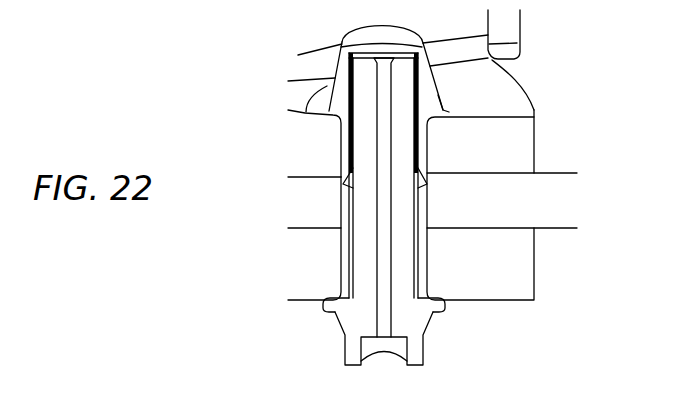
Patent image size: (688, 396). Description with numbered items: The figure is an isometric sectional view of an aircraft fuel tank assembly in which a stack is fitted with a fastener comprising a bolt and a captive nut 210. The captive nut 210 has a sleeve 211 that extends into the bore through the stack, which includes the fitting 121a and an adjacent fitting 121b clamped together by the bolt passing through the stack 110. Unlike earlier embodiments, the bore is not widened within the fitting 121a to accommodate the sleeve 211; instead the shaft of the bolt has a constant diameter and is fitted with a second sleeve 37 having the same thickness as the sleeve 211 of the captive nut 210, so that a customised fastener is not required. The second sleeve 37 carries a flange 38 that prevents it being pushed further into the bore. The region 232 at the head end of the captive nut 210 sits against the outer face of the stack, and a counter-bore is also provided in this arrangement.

The captive nut 210 is at (318, 63).
The sealing lip 232 is at (453, 108).
The sleeve of the captive nut 211 is at (427, 158).
The second sleeve 37 is at (425, 249).
The flange 38 is at (440, 311).
The fitting 121a is at (302, 134).
The housing body 110 is at (302, 204).
The left housing lower part 121b is at (303, 278).